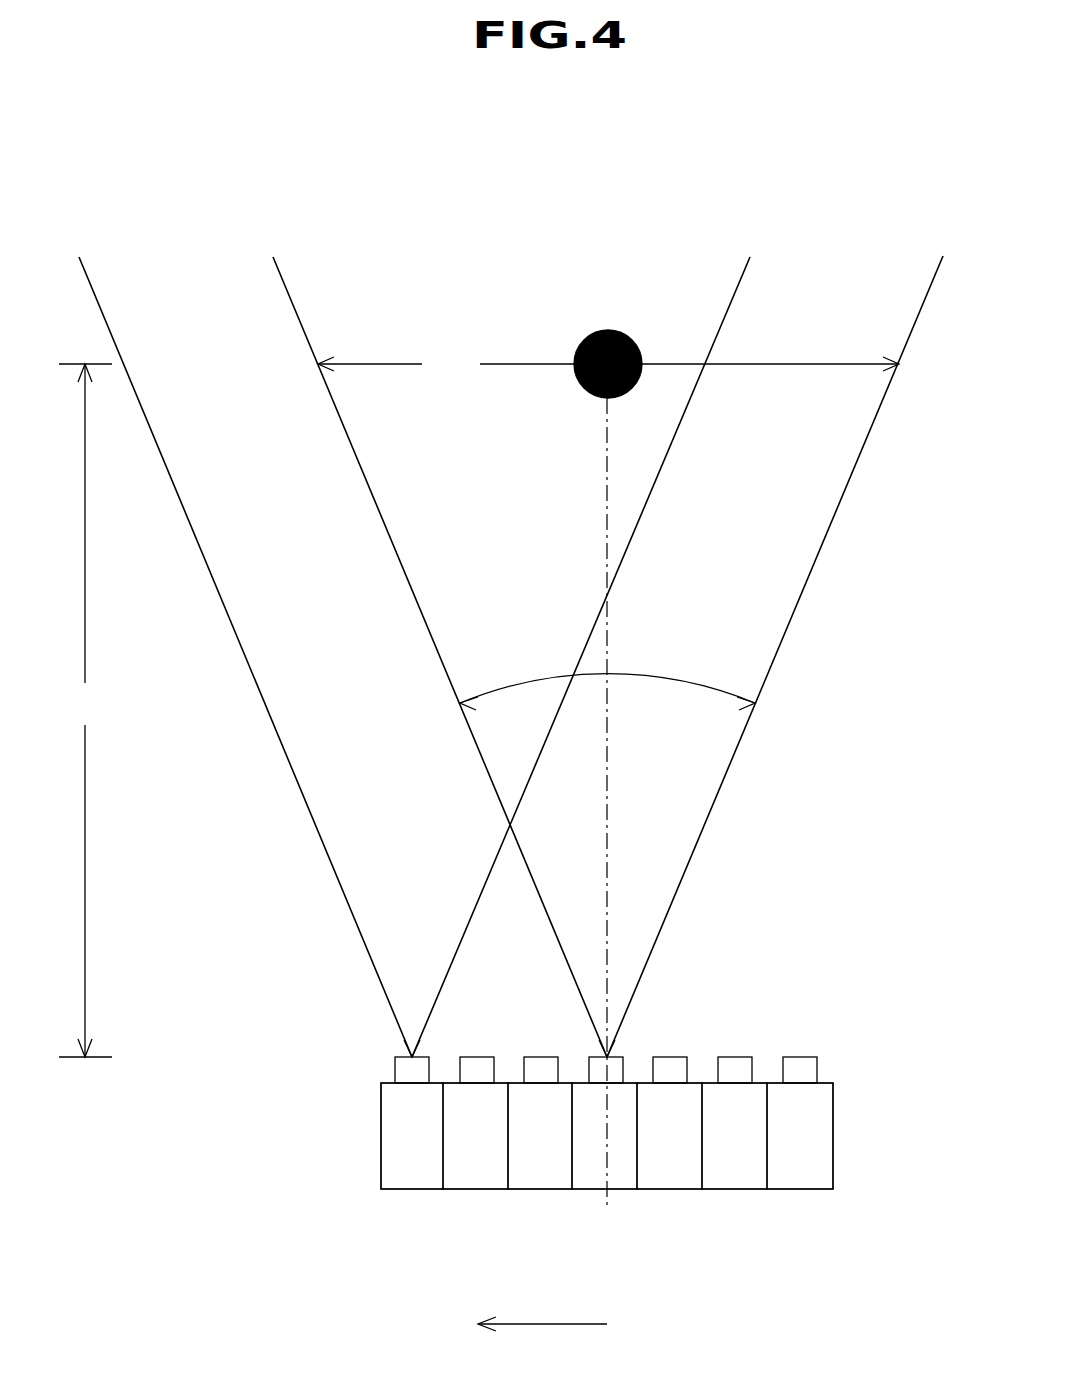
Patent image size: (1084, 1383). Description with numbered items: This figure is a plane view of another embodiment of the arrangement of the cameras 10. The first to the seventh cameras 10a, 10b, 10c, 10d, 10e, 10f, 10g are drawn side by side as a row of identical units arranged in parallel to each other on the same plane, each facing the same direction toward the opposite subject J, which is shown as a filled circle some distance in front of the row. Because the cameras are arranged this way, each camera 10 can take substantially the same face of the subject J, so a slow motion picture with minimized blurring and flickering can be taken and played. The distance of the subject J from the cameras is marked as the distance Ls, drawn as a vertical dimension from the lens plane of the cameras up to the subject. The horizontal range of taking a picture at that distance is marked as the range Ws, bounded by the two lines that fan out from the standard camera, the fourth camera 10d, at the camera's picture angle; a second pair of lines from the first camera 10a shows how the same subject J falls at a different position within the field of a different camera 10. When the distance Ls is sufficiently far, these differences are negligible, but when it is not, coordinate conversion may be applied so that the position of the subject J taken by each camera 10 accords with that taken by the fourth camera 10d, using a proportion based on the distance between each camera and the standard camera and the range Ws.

The camera 10 is at (860, 1051).
The first camera 10a is at (410, 1191).
The second camera 10b is at (477, 1191).
The third camera 10c is at (543, 1191).
The fourth camera 10d is at (588, 1191).
The fifth camera 10e is at (667, 1191).
The sixth camera 10f is at (733, 1191).
The seventh camera 10g is at (799, 1191).
The subject J is at (576, 352).
The range of taking a picture Ws is at (608, 364).
The distance of the subject Ls is at (85, 710).